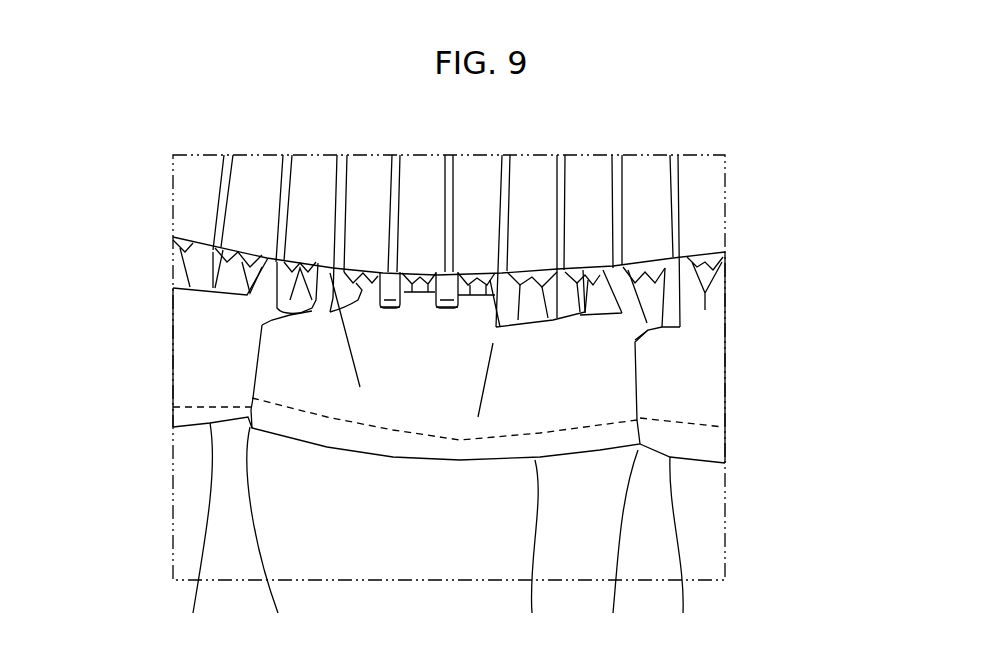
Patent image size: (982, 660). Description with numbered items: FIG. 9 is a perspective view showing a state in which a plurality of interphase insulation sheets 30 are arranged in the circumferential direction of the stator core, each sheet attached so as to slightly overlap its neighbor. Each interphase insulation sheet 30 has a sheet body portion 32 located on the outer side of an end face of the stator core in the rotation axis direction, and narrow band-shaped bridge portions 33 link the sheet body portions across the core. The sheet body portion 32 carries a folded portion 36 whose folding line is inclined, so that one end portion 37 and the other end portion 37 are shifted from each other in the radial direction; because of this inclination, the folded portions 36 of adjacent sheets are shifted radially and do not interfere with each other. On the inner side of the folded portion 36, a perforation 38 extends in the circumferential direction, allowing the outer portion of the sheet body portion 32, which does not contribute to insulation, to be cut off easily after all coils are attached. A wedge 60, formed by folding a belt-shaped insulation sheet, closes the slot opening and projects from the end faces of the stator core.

The interphase insulation sheet 30 is at (449, 357).
The sheet body portion 32 is at (209, 344).
The bridge portion 33 is at (330, 290).
The folded portion 36 is at (438, 534).
The end portion 37 is at (442, 536).
The perforation 38 is at (210, 407).
The wedge 60 is at (394, 305).